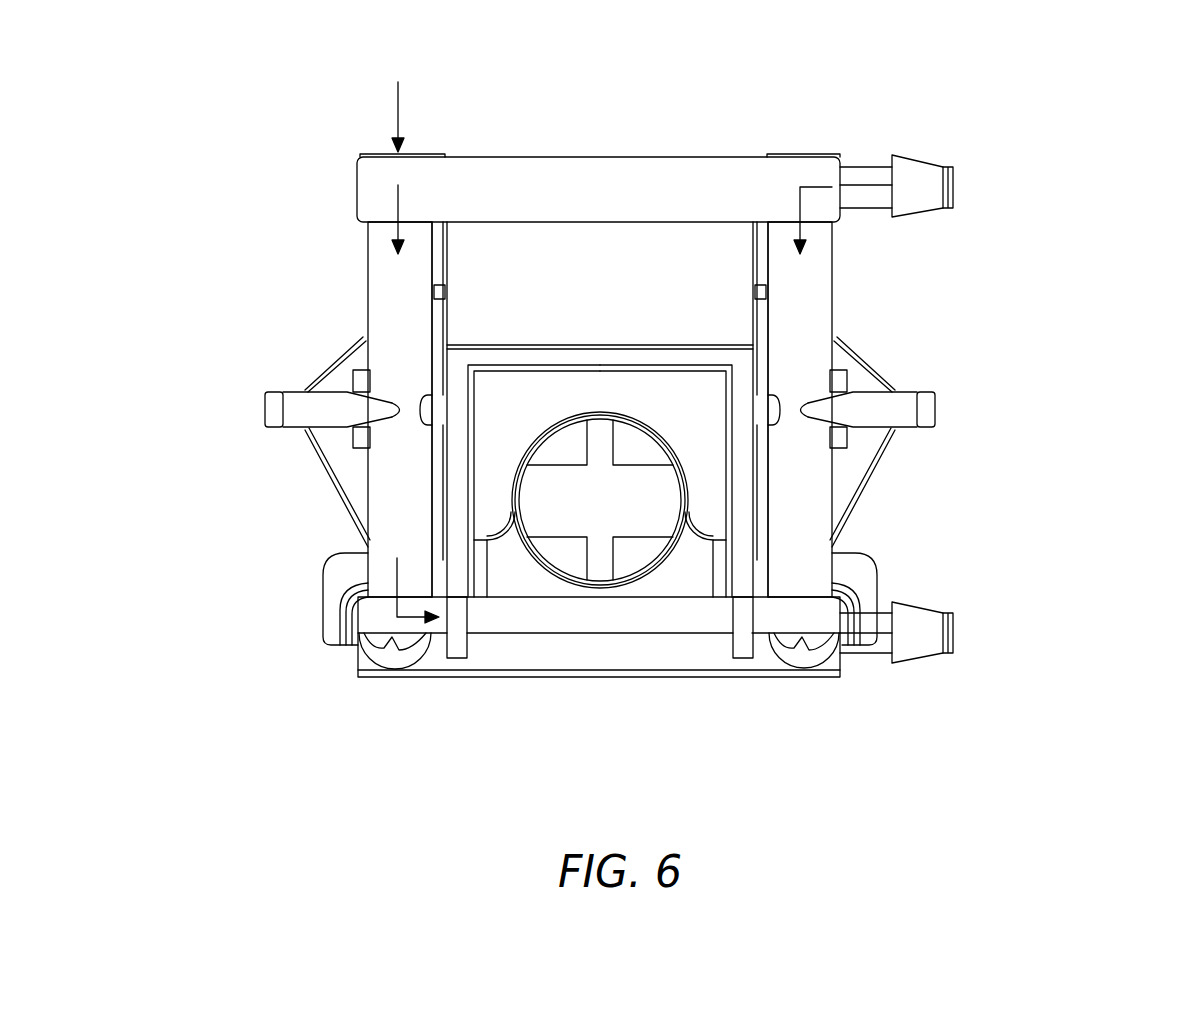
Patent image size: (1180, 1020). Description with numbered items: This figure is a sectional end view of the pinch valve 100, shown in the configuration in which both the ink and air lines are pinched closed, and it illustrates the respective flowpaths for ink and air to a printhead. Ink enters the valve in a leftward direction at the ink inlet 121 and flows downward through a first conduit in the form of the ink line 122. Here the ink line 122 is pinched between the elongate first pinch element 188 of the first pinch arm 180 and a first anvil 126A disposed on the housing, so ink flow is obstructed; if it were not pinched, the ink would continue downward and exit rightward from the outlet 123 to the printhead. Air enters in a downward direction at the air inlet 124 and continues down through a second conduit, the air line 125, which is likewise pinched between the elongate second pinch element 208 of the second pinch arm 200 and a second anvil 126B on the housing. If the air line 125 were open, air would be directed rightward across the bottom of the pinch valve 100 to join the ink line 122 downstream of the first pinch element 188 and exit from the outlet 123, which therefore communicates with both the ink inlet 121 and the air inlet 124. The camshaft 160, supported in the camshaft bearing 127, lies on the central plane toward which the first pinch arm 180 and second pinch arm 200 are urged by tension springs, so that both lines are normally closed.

The pinch valve 100 is at (262, 148).
The ink inlet 121 is at (972, 180).
The ink line 122 is at (803, 296).
The outlet 123 is at (962, 633).
The air inlet 124 is at (402, 141).
The air line 125 is at (397, 288).
The first anvil 126A is at (755, 410).
The second anvil 126B is at (445, 412).
The camshaft bearing 127 is at (597, 414).
The camshaft 160 is at (570, 533).
The first pinch arm 180 is at (904, 442).
The first pinch element 188 is at (806, 412).
The second pinch arm 200 is at (292, 442).
The second pinch element 208 is at (388, 412).